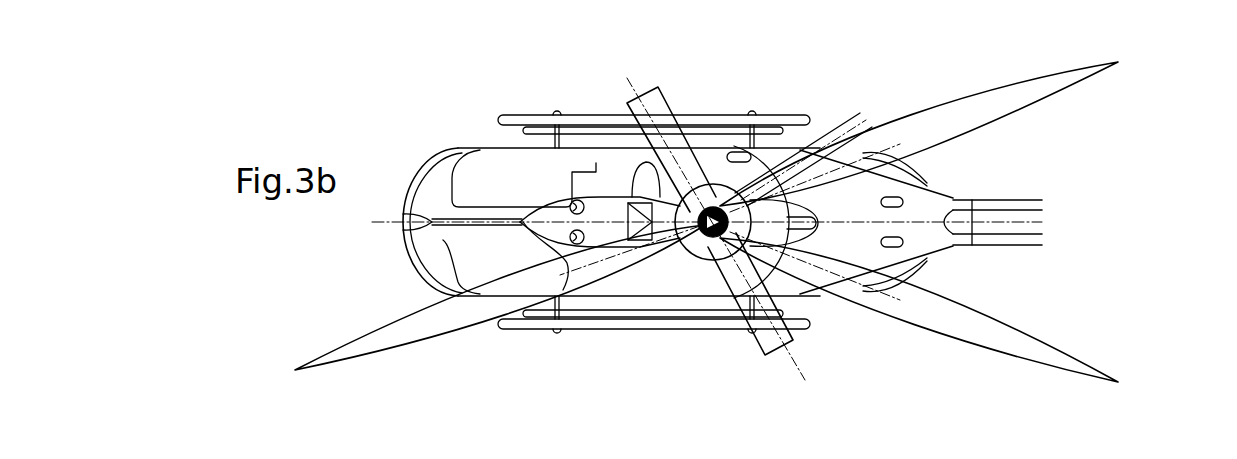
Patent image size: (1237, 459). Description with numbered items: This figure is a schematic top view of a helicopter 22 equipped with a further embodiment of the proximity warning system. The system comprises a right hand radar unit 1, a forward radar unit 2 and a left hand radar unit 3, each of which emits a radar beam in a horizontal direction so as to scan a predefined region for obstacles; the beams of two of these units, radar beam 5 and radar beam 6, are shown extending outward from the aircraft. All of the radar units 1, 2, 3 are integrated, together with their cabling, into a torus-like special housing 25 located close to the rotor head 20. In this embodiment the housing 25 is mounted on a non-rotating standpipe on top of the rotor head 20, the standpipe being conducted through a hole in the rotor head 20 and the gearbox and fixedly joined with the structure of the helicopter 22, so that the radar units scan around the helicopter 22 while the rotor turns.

The right hand radar unit 1 is at (713, 184).
The forward radar unit 2 is at (638, 195).
The left hand radar unit 3 is at (713, 262).
The radar beam 5 is at (373, 340).
The radar beam 6 is at (1005, 340).
The rotor head 20 is at (833, 125).
The helicopter 22 is at (478, 173).
The housing 25 is at (707, 258).